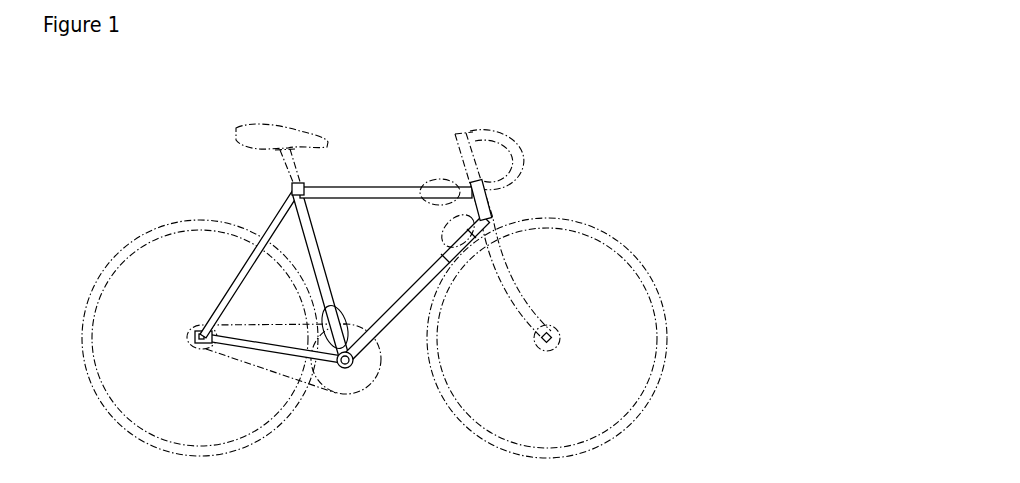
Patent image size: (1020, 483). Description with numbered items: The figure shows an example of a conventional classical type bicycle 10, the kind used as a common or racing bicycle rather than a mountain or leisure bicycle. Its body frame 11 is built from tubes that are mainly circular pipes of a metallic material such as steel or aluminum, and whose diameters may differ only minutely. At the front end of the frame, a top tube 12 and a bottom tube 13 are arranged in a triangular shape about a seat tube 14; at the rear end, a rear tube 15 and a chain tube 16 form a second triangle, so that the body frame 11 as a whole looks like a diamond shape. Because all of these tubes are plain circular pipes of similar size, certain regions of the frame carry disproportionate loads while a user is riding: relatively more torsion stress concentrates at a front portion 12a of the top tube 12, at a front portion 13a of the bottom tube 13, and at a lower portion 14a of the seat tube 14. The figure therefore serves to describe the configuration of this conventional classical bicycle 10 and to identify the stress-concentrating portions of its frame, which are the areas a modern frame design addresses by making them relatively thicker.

The classical type bicycle 10 is at (571, 135).
The body frame 11 is at (387, 180).
The top tube 12 is at (353, 190).
The front portion of the top tube 12a is at (437, 179).
The bottom tube 13 is at (405, 302).
The front portion of the bottom tube 13a is at (493, 233).
The seat tube 14 is at (304, 232).
The lower portion of the seat tube 14a is at (350, 315).
The rear tube 15 is at (244, 264).
The chain tube 16 is at (284, 353).